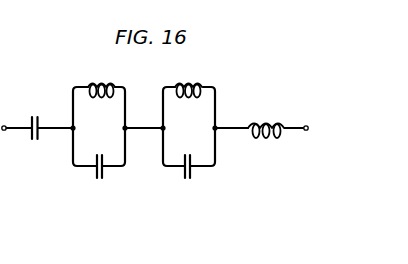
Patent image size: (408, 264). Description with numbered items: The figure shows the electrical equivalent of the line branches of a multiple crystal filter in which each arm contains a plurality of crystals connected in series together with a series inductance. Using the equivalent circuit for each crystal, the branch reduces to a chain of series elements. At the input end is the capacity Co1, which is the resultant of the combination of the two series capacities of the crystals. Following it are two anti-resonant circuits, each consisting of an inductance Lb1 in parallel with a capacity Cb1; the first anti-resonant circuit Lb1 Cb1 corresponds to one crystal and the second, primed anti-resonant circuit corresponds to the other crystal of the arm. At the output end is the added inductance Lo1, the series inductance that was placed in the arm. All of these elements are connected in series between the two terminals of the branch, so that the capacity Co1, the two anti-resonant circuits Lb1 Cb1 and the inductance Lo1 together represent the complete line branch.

The resultant series capacity Co1 is at (40, 115).
The anti-resonant circuit inductance Lb1 is at (195, 58).
The anti-resonant circuit capacity Cb1 is at (98, 180).
The added inductance Lo1 is at (264, 122).